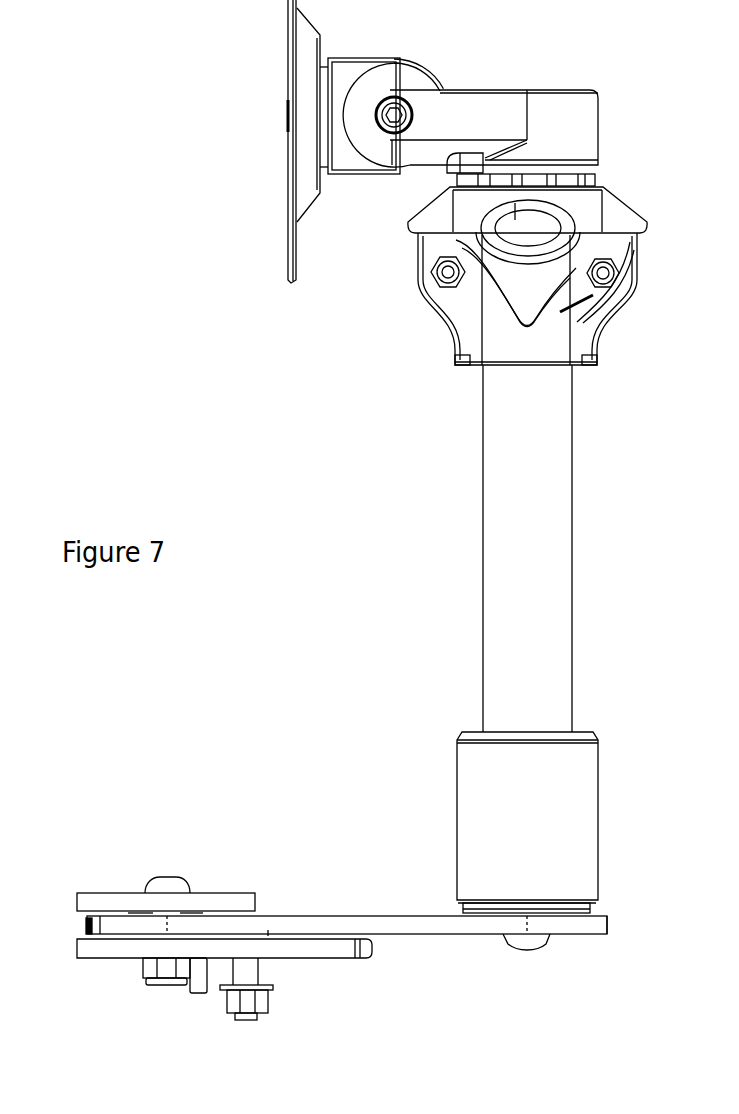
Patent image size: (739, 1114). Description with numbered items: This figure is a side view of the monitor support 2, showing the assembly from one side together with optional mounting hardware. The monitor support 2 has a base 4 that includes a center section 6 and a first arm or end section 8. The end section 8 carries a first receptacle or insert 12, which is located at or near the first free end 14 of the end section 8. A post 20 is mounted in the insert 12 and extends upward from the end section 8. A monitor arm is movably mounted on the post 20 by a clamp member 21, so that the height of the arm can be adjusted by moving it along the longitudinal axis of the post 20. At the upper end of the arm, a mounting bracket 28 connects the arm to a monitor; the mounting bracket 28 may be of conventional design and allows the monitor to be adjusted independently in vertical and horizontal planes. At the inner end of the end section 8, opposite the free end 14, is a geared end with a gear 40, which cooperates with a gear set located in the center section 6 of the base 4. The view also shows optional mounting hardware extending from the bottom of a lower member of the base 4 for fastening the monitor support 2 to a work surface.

The monitor support 2 is at (637, 90).
The base 4 is at (89, 889).
The center section 6 is at (103, 950).
The first arm or end section 8 is at (422, 928).
The first receptacle or insert 12 is at (588, 780).
The first free end 14 is at (593, 928).
The post 20 is at (560, 445).
The clamp member 21 is at (616, 208).
The mounting bracket 28 is at (478, 108).
The gear 40 is at (85, 928).